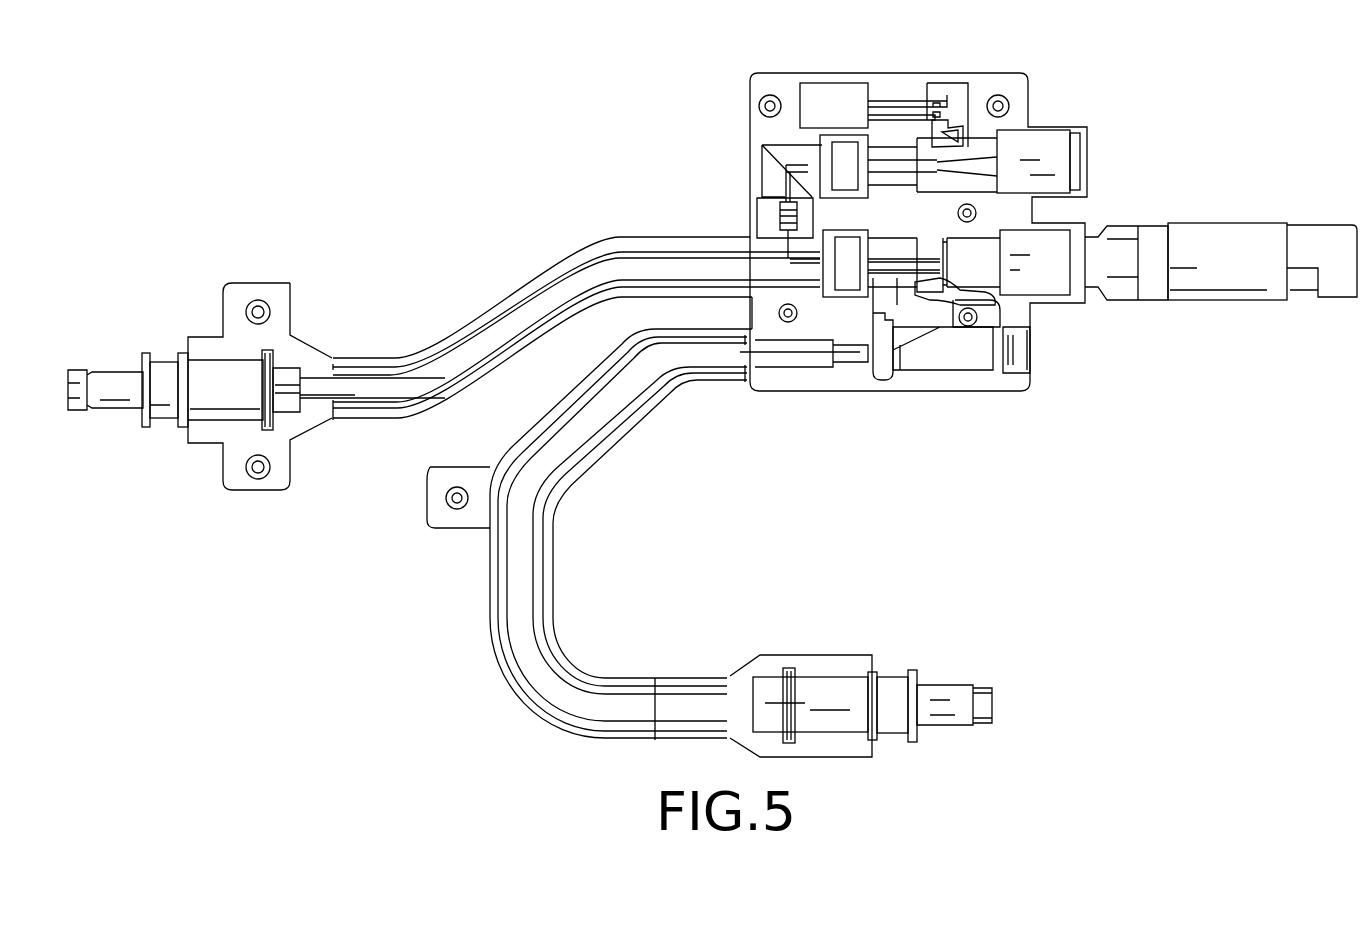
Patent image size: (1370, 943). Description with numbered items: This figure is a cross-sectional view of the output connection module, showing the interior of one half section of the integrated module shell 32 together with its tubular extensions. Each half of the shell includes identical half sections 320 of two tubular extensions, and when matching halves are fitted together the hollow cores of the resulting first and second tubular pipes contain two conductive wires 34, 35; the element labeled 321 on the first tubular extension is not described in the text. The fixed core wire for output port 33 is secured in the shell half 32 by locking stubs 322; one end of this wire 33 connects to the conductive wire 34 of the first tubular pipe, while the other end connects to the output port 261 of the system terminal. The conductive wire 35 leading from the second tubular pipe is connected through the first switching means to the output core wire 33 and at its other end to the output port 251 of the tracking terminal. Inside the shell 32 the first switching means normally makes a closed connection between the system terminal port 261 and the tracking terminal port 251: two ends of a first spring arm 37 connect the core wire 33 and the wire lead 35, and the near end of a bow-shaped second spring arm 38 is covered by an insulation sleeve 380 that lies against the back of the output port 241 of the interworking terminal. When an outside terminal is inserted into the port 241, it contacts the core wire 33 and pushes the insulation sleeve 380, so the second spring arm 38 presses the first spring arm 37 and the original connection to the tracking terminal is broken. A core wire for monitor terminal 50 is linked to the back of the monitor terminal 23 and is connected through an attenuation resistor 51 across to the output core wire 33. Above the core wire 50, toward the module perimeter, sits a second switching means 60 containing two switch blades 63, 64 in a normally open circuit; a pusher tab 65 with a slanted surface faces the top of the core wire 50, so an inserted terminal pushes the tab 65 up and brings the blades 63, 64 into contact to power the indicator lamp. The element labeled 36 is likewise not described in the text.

The monitor terminal 23 is at (1043, 137).
The half section of the integrated module shell 32 is at (947, 72).
The fixed core wire for output port 33 is at (888, 265).
The conductive wire 34 is at (547, 317).
The conductive wire 35 is at (523, 550).
The block 36 is at (967, 347).
The first spring arm 37 is at (912, 347).
The second spring arm 38 is at (1000, 300).
The core wire for monitor terminal 50 is at (878, 160).
The attenuation resistor 51 is at (777, 208).
The second switching means 60 is at (832, 90).
The switch blade 63 is at (922, 100).
The switch blade 64 is at (900, 113).
The pusher tab 65 is at (962, 125).
The output port of the interworking terminal 241 is at (1052, 293).
The output port of the tracking terminal 251 is at (947, 688).
The output port of the system terminal 261 is at (115, 410).
The half section of tubular extension 320 is at (617, 238).
The tube 321 is at (537, 290).
The locking stub 322 is at (258, 307).
The insulation sleeve 380 is at (940, 290).